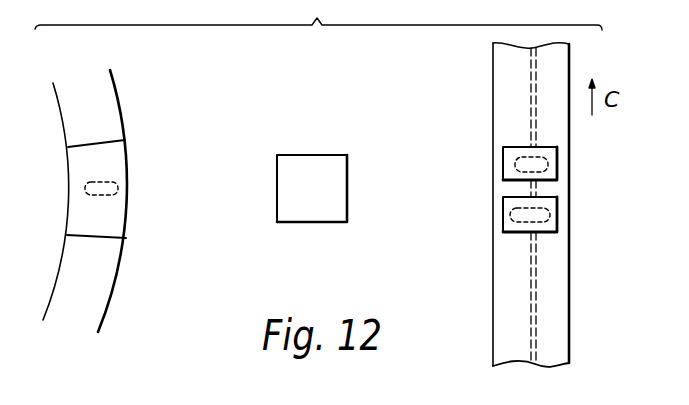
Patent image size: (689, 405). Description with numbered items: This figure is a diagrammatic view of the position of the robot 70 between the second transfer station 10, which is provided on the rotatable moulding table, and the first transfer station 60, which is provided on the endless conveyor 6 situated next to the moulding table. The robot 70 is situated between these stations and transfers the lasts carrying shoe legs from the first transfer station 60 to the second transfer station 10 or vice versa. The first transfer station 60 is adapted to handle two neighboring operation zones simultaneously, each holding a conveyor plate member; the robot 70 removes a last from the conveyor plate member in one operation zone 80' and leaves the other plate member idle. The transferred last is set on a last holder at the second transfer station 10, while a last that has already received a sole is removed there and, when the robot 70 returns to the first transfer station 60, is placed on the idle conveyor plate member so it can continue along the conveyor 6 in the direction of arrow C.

The second transfer station 10 is at (115, 160).
The robot 70 is at (302, 178).
The first transfer station 60 is at (572, 194).
The operation zone 80' is at (568, 186).
The endless conveyor 6 is at (532, 303).